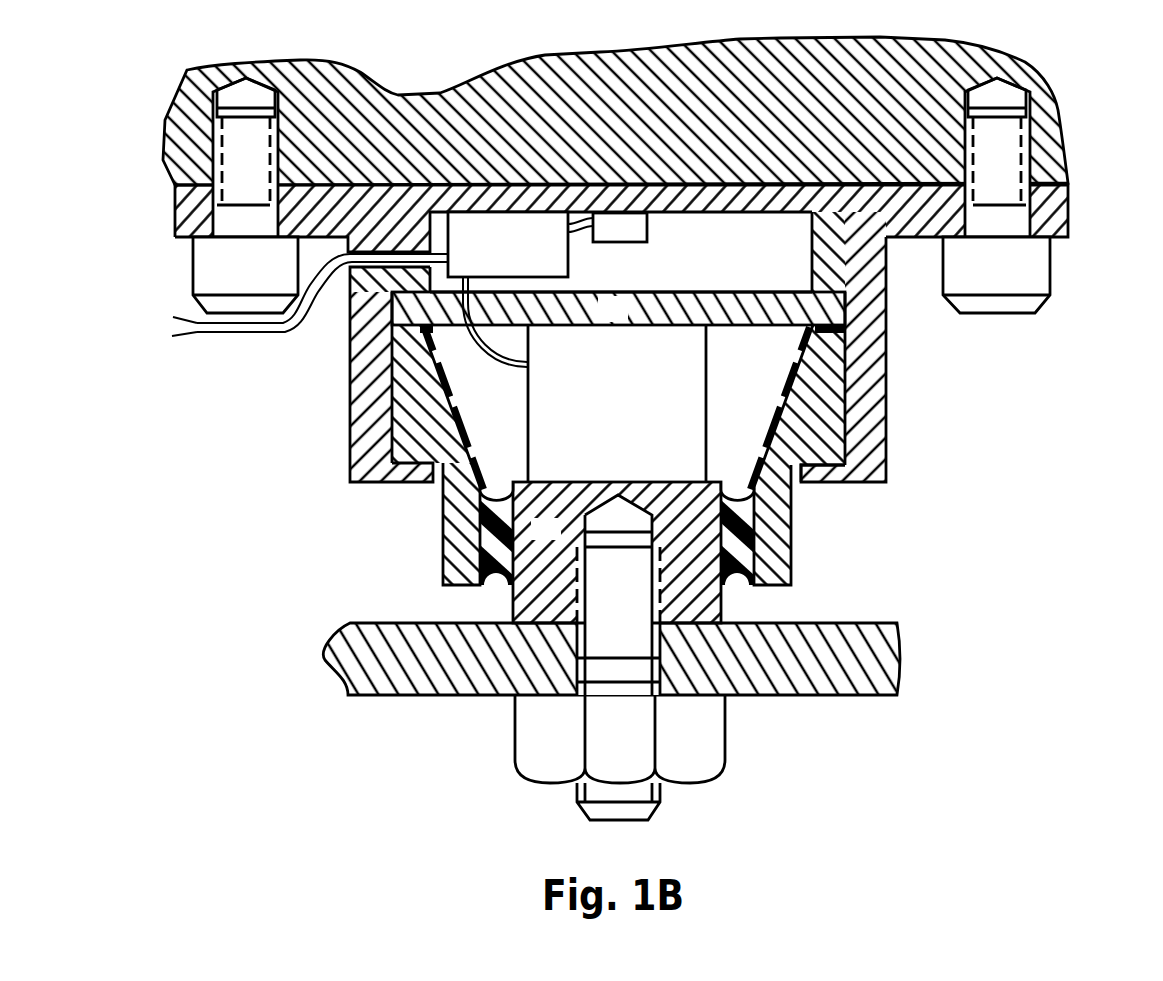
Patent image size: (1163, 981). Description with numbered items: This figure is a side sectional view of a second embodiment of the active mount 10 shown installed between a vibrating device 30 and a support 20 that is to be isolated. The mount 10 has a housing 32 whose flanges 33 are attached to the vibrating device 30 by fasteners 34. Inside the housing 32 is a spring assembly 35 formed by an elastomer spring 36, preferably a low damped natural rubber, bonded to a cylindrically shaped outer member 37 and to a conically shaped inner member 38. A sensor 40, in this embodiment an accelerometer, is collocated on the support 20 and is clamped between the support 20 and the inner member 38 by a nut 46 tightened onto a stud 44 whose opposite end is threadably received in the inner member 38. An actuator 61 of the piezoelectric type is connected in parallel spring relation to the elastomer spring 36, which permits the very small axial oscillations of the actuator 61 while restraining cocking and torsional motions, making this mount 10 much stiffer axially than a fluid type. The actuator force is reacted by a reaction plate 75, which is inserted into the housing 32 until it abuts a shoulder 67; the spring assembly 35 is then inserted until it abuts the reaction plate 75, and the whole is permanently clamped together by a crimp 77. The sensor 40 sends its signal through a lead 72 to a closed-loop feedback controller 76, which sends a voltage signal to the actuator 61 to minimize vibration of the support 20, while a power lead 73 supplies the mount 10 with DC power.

The active mount 10 is at (899, 454).
The support 20 is at (372, 78).
The vibrating device 30 is at (897, 683).
The housing 32 is at (873, 347).
The flanges 33 is at (175, 204).
The fasteners 34 is at (193, 256).
The spring assembly 35 is at (430, 540).
The elastomer spring 36 is at (757, 522).
The outer member 37 is at (833, 405).
The inner member 38 is at (617, 552).
The sensor 40 is at (620, 227).
The stud 44 is at (618, 595).
The nut 46 is at (725, 720).
The actuator 61 is at (617, 403).
The shoulder 67 is at (790, 303).
The lead 72 is at (590, 240).
The power lead 73 is at (238, 333).
The reaction plate 75 is at (618, 308).
The feedback controller 76 is at (508, 244).
The crimp 77 is at (822, 483).